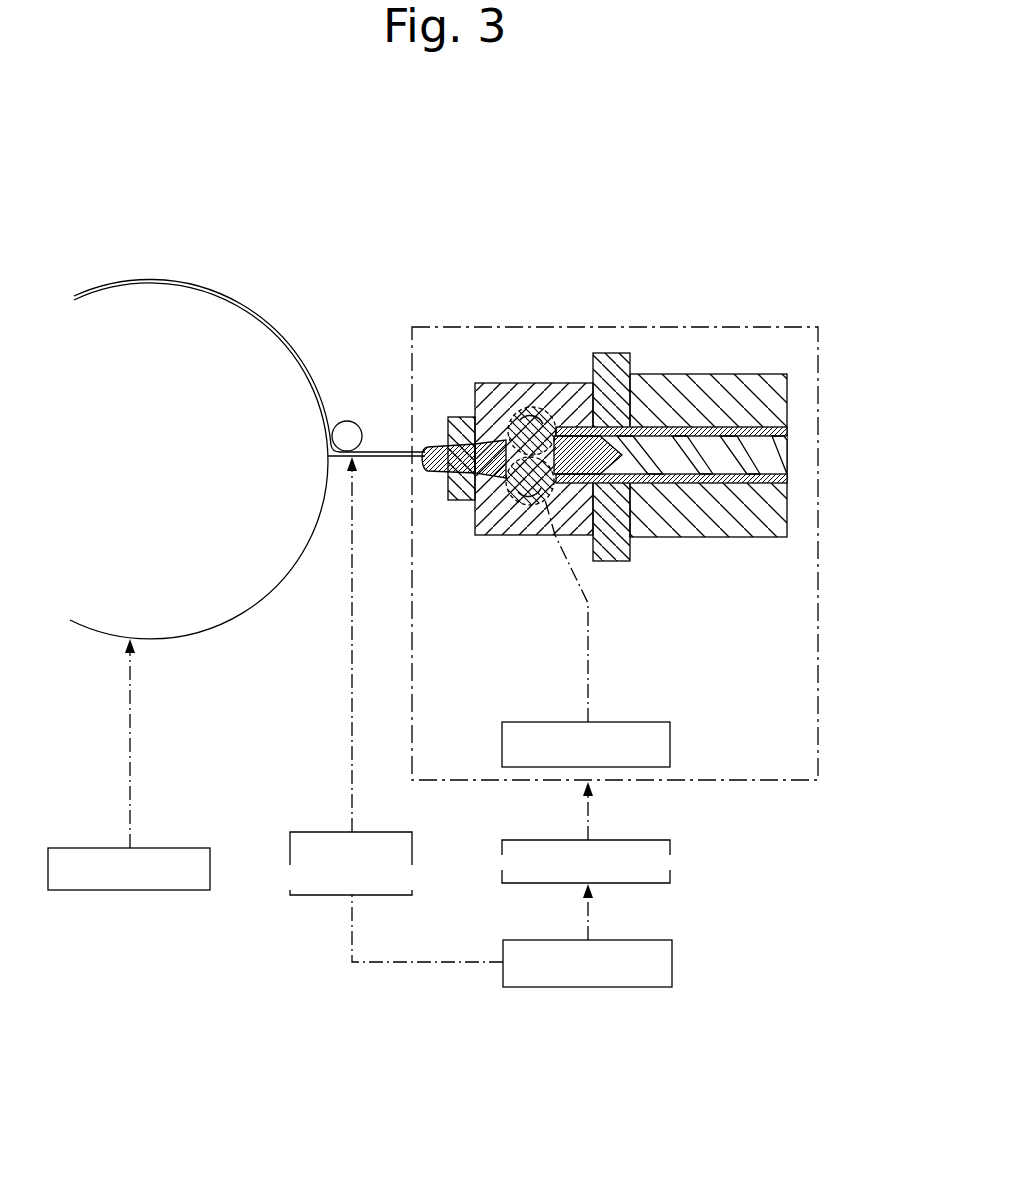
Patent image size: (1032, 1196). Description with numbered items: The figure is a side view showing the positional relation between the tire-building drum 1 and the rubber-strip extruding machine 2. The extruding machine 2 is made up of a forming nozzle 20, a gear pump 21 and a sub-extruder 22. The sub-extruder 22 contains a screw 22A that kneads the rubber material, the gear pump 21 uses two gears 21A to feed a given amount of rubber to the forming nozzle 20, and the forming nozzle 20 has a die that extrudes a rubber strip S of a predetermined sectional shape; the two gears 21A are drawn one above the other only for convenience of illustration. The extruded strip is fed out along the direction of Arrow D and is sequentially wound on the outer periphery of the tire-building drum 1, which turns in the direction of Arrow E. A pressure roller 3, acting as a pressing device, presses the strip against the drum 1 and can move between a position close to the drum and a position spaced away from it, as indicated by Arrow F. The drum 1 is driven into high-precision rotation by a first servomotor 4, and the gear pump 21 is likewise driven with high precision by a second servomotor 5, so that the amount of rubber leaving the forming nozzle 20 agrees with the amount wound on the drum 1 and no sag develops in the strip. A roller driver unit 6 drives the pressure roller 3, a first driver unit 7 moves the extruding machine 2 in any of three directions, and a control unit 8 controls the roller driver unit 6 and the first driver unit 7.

The tire-building drum 1 is at (255, 590).
The sheet S is at (192, 285).
The Arrow E is at (275, 379).
The pressure roller 3 is at (347, 419).
The Arrow D is at (400, 478).
The Arrow F is at (376, 424).
The extruding machine 2 is at (667, 407).
The forming nozzle 20 is at (460, 417).
The gear pump 21 is at (542, 407).
The gears 21A is at (505, 498).
The sub-extruder 22 is at (722, 362).
The screw 22A is at (763, 457).
The first servomotor 4 is at (176, 891).
The second servomotor 5 is at (672, 733).
The roller driver unit 6 is at (305, 896).
The first driver unit 7 is at (672, 862).
The control unit 8 is at (674, 966).